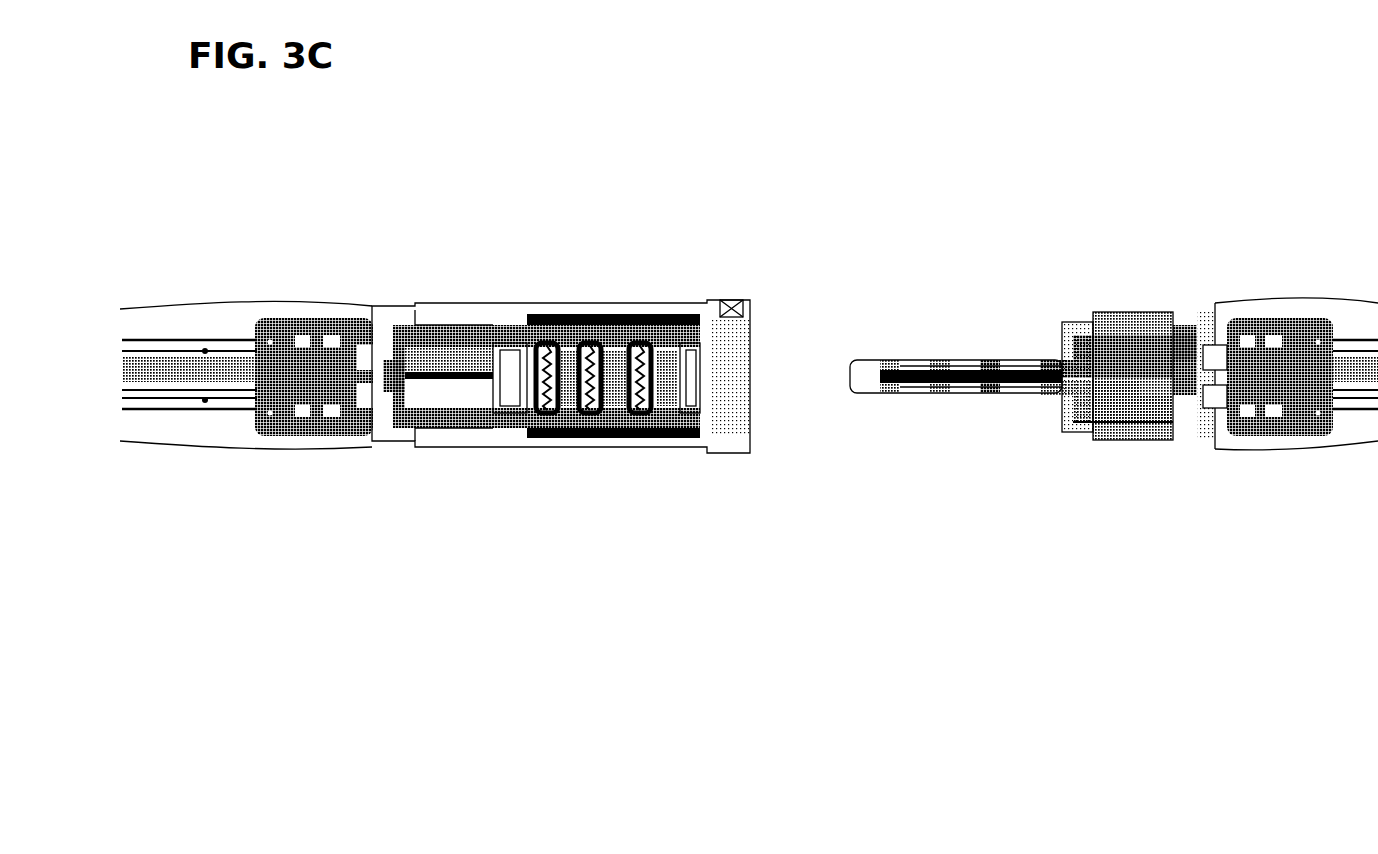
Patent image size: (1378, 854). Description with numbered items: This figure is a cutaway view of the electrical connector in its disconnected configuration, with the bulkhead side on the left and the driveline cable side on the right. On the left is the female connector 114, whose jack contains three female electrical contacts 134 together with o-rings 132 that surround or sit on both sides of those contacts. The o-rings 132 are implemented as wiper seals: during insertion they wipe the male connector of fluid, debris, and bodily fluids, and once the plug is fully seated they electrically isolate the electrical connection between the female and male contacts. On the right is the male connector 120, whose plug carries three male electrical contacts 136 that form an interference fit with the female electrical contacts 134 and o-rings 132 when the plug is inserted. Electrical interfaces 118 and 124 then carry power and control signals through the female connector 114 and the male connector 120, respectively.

The female connector 114 is at (435, 346).
The electrical interface 118 is at (403, 383).
The o-rings 132 is at (585, 318).
The female electrical contacts 134 is at (570, 428).
The male connector 120 is at (1114, 378).
The male electrical contacts 136 is at (983, 400).
The electrical interface 124 is at (1165, 442).